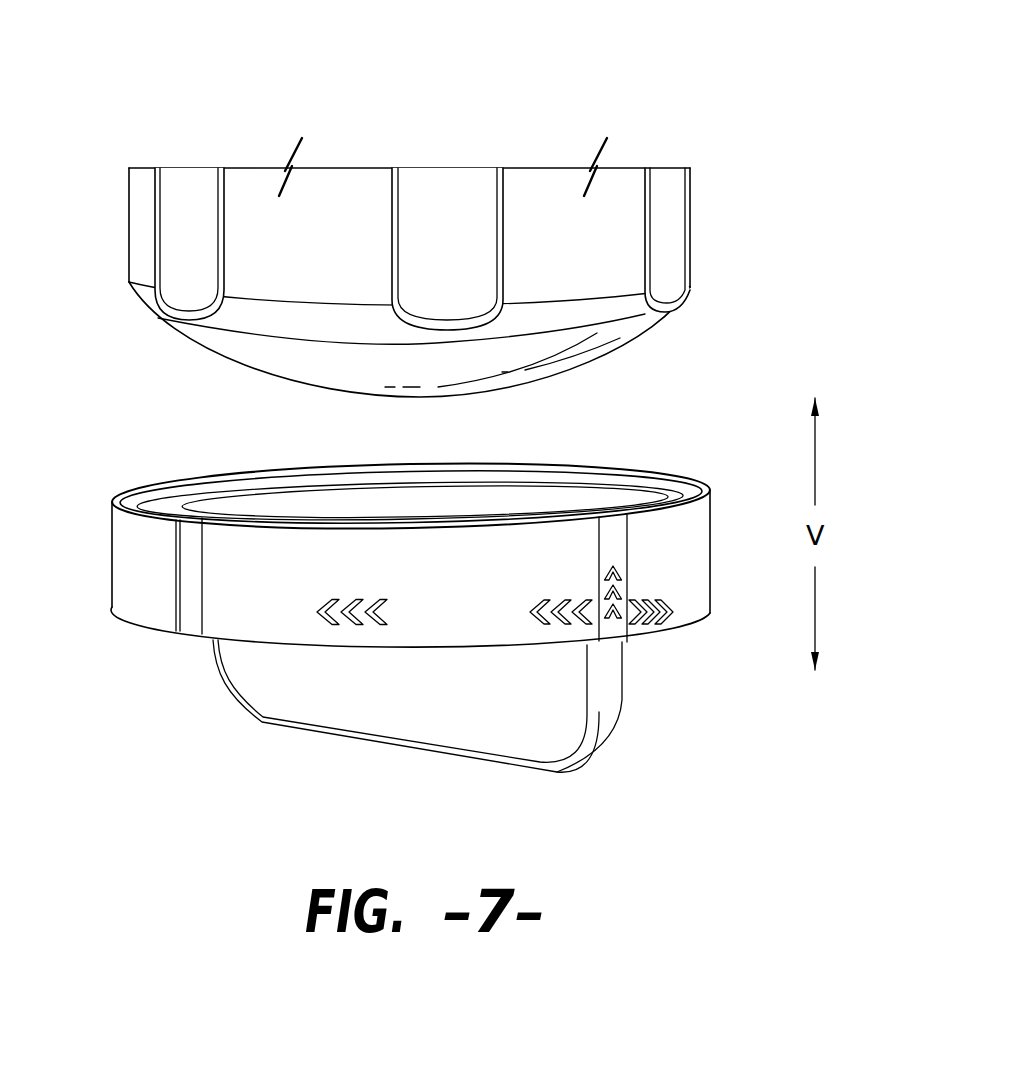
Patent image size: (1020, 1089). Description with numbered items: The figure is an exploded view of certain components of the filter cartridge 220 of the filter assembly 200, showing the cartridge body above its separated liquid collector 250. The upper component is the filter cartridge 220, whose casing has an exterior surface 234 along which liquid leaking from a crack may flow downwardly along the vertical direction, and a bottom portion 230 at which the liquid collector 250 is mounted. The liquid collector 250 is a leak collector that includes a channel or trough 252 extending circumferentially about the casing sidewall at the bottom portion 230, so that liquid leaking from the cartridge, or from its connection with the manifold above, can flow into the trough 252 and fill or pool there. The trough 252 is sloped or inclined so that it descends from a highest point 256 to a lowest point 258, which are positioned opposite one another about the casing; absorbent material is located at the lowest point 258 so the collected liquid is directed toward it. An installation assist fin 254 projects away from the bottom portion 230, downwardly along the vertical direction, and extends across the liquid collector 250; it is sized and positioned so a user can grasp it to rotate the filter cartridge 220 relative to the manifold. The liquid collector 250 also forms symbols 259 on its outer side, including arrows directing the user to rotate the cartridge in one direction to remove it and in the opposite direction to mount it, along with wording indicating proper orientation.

The filter assembly 200 is at (158, 101).
The filter cartridge 220 is at (695, 182).
The exterior surface 234 is at (626, 219).
The bottom portion 230 is at (686, 323).
The liquid collector 250 is at (127, 573).
The trough 252 is at (135, 495).
The lowest point 258 is at (200, 466).
The highest point 256 is at (612, 507).
The symbols 259 is at (447, 629).
The installation assist fin 254 is at (360, 708).